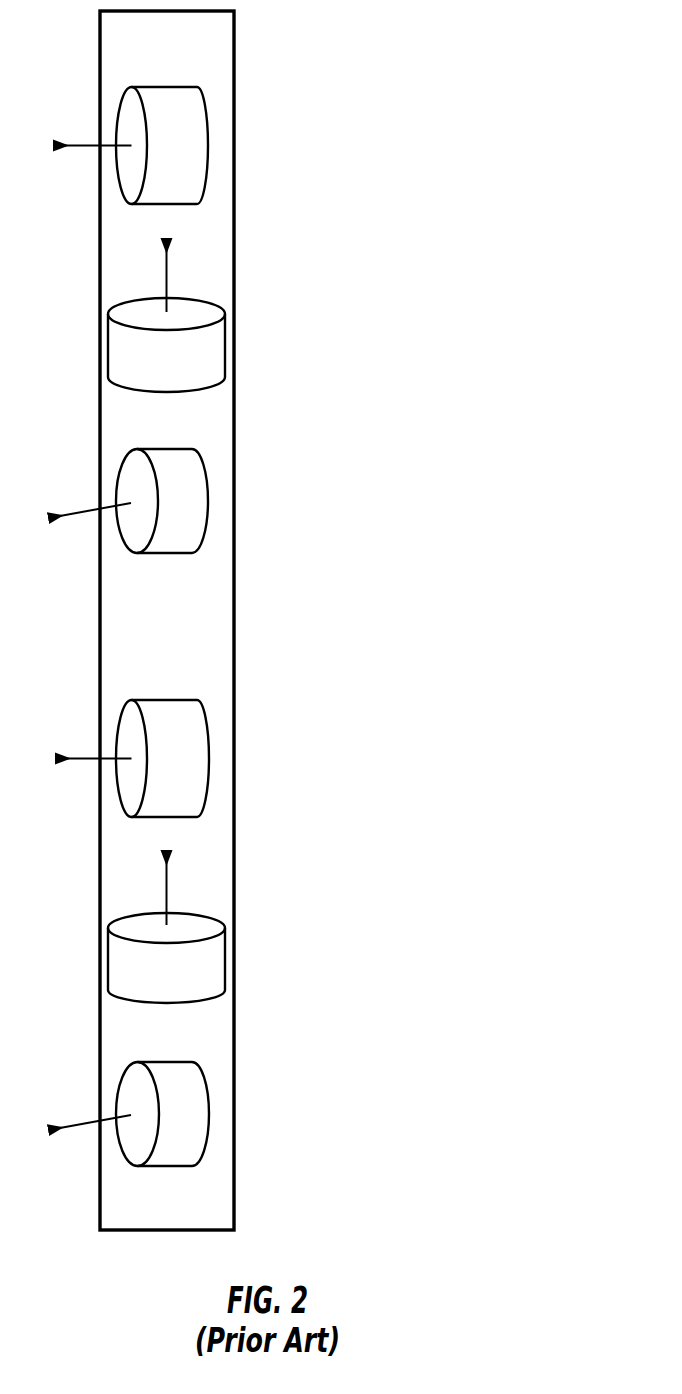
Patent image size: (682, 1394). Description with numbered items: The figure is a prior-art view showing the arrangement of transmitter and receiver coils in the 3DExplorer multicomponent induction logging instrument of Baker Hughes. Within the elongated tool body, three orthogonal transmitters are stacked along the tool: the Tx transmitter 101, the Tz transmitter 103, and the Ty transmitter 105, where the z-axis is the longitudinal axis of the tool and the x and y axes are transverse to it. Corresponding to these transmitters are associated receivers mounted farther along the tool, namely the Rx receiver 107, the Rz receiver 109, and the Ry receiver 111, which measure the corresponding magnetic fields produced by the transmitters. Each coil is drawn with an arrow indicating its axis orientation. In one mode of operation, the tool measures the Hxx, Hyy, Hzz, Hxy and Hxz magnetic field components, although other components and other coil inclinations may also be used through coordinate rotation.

The Tx transmitter 101 is at (330, 122).
The Tz transmitter 103 is at (330, 327).
The Ty transmitter 105 is at (330, 476).
The Rx receiver 107 is at (330, 732).
The Rz receiver 109 is at (330, 940).
The Ry receiver 111 is at (330, 1090).